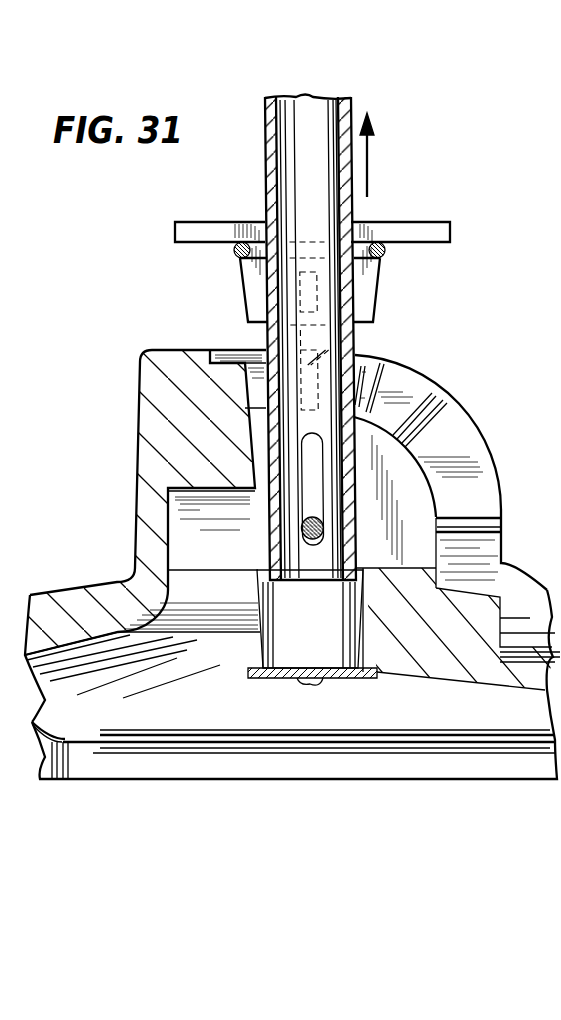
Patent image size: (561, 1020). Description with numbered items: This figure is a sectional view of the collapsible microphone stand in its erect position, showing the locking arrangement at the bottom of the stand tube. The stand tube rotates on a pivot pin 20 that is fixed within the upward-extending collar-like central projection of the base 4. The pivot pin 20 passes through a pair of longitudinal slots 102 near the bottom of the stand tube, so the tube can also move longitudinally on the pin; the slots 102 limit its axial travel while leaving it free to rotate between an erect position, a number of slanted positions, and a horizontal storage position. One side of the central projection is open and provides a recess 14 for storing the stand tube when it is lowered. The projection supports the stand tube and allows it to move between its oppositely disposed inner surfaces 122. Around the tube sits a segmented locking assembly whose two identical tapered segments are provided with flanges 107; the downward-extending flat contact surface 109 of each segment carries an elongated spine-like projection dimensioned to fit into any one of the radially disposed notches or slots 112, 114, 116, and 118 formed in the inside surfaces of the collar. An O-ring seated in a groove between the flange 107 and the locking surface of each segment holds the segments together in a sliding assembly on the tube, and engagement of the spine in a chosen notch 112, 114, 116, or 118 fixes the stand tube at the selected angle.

The base 4 is at (73, 596).
The recess 14 is at (520, 605).
The pivot pin 20 is at (302, 537).
The longitudinal slots 102 is at (315, 480).
The flanges 107 is at (210, 220).
The flat contact surface 109 is at (245, 293).
The notch 112 is at (356, 349).
The notch 114 is at (375, 374).
The notch 116 is at (440, 390).
The notch 118 is at (482, 502).
The inner surface 122 is at (447, 422).